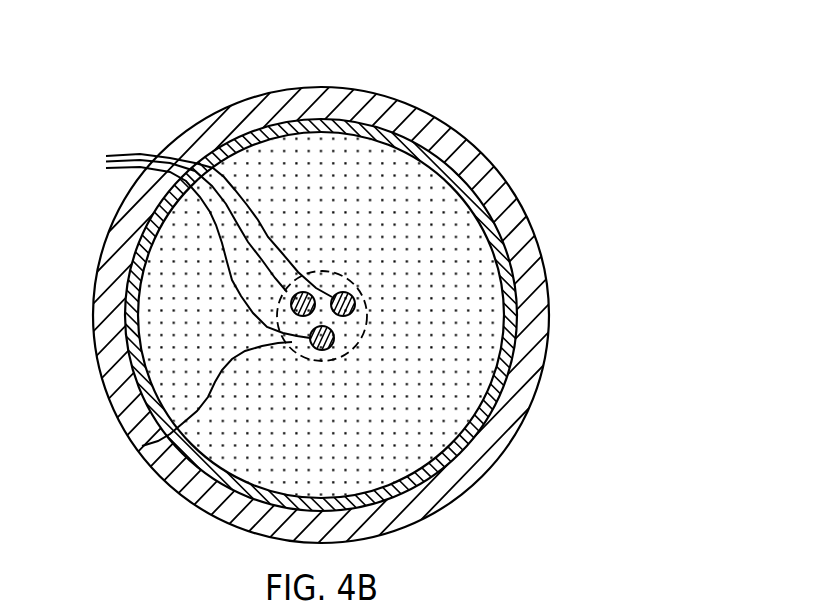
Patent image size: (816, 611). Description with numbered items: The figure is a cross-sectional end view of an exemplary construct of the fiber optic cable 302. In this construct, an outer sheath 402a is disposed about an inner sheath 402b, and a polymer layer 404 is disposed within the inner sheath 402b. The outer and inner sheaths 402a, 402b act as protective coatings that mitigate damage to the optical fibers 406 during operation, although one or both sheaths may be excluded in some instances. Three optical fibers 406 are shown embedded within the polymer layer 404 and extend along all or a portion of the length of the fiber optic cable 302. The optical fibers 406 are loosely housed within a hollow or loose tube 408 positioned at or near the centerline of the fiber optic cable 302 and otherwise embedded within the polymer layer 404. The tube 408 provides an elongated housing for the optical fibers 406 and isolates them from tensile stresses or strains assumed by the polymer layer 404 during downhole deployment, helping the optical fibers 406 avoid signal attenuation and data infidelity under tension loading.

The fiber optic cable 302 is at (660, 170).
The outer sheath 402a is at (538, 273).
The inner sheath 402b is at (512, 322).
The polymer layer 404 is at (495, 372).
The optical fibers 406 is at (216, 257).
The tube 408 is at (142, 446).